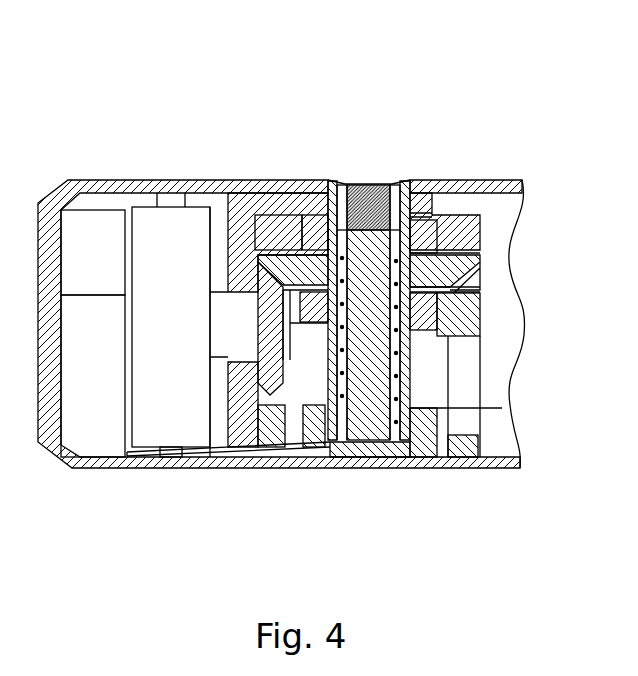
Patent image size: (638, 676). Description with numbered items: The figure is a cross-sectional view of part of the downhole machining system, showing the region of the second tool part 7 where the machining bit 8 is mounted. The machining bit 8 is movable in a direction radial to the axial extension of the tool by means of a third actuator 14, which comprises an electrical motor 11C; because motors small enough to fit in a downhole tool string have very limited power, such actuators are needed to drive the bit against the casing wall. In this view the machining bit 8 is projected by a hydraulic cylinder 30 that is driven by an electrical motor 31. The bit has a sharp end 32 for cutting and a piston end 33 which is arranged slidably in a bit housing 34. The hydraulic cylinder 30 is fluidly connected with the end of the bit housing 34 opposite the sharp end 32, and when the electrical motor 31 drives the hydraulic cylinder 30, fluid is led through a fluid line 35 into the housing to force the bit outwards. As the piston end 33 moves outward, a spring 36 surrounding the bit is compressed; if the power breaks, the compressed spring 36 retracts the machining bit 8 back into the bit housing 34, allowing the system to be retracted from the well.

The second tool part 7 is at (533, 93).
The machining bit 8 is at (386, 183).
The electrical motor 11C is at (146, 218).
The third actuator 14 is at (187, 228).
The hydraulic cylinder 30 is at (92, 437).
The electrical motor 31 is at (77, 233).
The sharp end 32 is at (353, 183).
The piston end 33 is at (393, 433).
The bit housing 34 is at (402, 378).
The fluid line 35 is at (274, 455).
The spring 36 is at (397, 330).